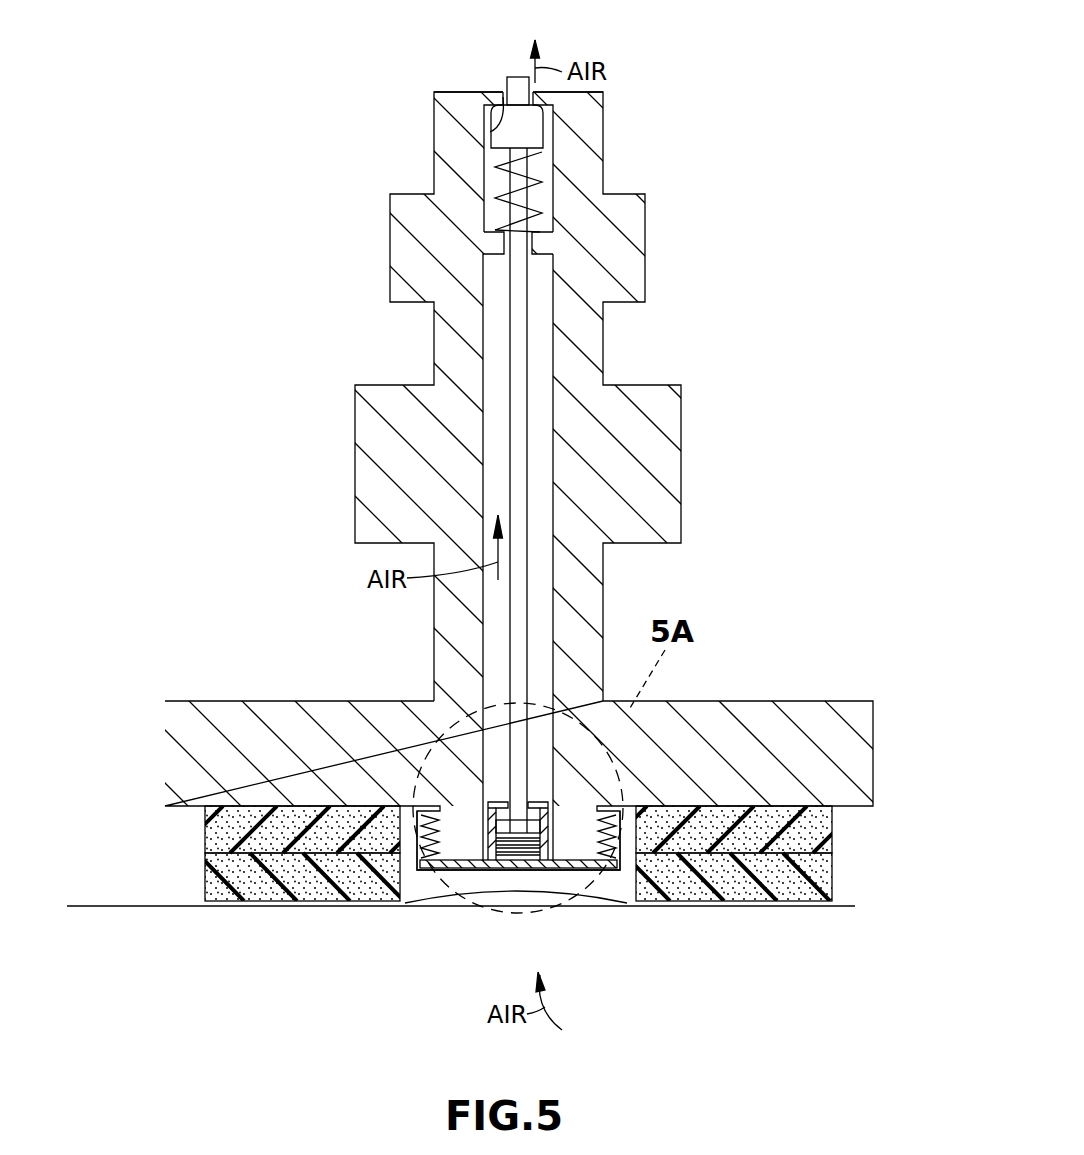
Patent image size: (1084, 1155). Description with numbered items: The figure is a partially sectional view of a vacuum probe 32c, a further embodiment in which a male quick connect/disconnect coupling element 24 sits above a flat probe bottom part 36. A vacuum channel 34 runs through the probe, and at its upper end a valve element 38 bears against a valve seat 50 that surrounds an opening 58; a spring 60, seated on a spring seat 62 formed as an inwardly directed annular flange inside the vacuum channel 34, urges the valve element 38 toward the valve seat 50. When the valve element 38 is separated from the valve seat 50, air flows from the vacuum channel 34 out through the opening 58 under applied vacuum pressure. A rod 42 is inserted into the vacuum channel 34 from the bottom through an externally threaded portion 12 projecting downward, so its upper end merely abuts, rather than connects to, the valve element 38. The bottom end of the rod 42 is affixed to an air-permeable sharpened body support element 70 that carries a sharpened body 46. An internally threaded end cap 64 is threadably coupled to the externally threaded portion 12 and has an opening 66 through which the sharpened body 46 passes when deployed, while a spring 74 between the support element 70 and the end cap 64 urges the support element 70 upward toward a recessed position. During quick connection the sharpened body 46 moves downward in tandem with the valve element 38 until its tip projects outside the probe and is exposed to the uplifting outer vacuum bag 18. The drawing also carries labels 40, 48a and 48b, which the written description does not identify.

The externally threaded portion 12 is at (630, 870).
The outer vacuum bag 18 is at (85, 906).
The male quick connect/disconnect coupling element 24 is at (604, 104).
The vacuum probe 32c is at (373, 243).
The vacuum channel 34 is at (483, 598).
The flat probe bottom part 36 is at (748, 700).
The valve element 38 is at (545, 132).
The valve stem 40 is at (516, 77).
The rod 42 is at (530, 362).
The sharpened body 46 is at (503, 880).
The upper pad layer 48a is at (205, 830).
The lower pad layer 48b is at (205, 878).
The valve seat 50 is at (492, 128).
The opening 58 is at (503, 97).
The spring 60 is at (528, 176).
The spring seat 62 is at (545, 258).
The internally threaded end cap 64 is at (423, 871).
The opening 66 is at (537, 870).
The air-permeable sharpened body support element 70 is at (570, 870).
The spring 74 is at (493, 867).